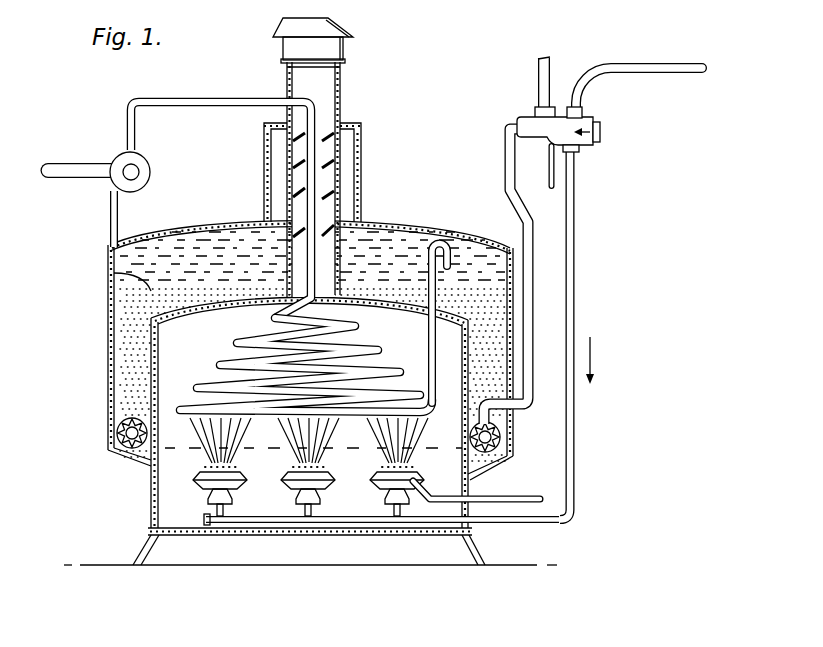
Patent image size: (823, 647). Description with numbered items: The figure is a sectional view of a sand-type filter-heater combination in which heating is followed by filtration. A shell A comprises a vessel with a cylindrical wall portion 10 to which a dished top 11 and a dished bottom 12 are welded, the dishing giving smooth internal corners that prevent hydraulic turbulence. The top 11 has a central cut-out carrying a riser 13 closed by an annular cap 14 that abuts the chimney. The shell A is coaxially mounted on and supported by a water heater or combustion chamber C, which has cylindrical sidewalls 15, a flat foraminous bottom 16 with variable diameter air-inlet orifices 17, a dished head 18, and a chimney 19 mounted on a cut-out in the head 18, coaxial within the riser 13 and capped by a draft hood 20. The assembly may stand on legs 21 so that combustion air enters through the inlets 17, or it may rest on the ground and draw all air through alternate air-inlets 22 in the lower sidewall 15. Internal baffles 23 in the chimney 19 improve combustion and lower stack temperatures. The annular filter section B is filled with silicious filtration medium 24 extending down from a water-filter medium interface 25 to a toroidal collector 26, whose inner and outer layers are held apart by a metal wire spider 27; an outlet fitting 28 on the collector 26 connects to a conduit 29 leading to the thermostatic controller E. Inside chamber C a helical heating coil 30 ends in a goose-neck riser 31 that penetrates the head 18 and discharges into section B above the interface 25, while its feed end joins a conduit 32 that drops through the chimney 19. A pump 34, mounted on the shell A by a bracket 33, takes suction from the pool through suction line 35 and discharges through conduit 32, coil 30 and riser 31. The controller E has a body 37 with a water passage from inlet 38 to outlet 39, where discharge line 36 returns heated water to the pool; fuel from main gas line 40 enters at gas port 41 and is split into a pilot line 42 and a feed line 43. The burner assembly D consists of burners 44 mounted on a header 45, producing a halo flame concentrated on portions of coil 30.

The cylindrical wall portion 10 is at (110, 300).
The top 11 is at (218, 227).
The bottom 12 is at (133, 460).
The riser 13 is at (359, 171).
The cap 14 is at (352, 123).
The cylindrical sidewalls 15 is at (150, 360).
The foraminous bottom 16 is at (340, 535).
The air-inlet orifices 17 is at (193, 508).
The head 18 is at (211, 298).
The chimney 19 is at (343, 77).
The draft hood 20 is at (345, 33).
The legs 21 is at (140, 550).
The alternate air-inlets 22 is at (147, 501).
The internal baffles 23 is at (326, 198).
The silicious filtration medium 24 is at (127, 338).
The water-filter medium interface 25 is at (114, 276).
The collector 26 is at (150, 424).
The metal wire spider 27 is at (117, 437).
The outlet fitting 28 is at (497, 424).
The conduit 29 is at (530, 262).
The helical heating coil 30 is at (247, 346).
The goose-neck riser 31 is at (448, 252).
The conduit 32 is at (167, 101).
The bracket 33 is at (118, 213).
The pump 34 is at (144, 170).
The suction line 35 is at (72, 163).
The discharge line 36 is at (546, 74).
The body 37 is at (594, 138).
The inlet 38 is at (523, 118).
The outlet 39 is at (534, 112).
The main gas line 40 is at (676, 53).
The gas port 41 is at (580, 110).
The pilot line 42 is at (553, 177).
The feed line 43 is at (576, 211).
The burner 44 is at (238, 483).
The header 45 is at (230, 521).
The shell A is at (108, 358).
The filter section B is at (129, 388).
The combustion chamber C is at (181, 451).
The burner assembly D is at (308, 496).
The thermostatic controller E is at (598, 131).